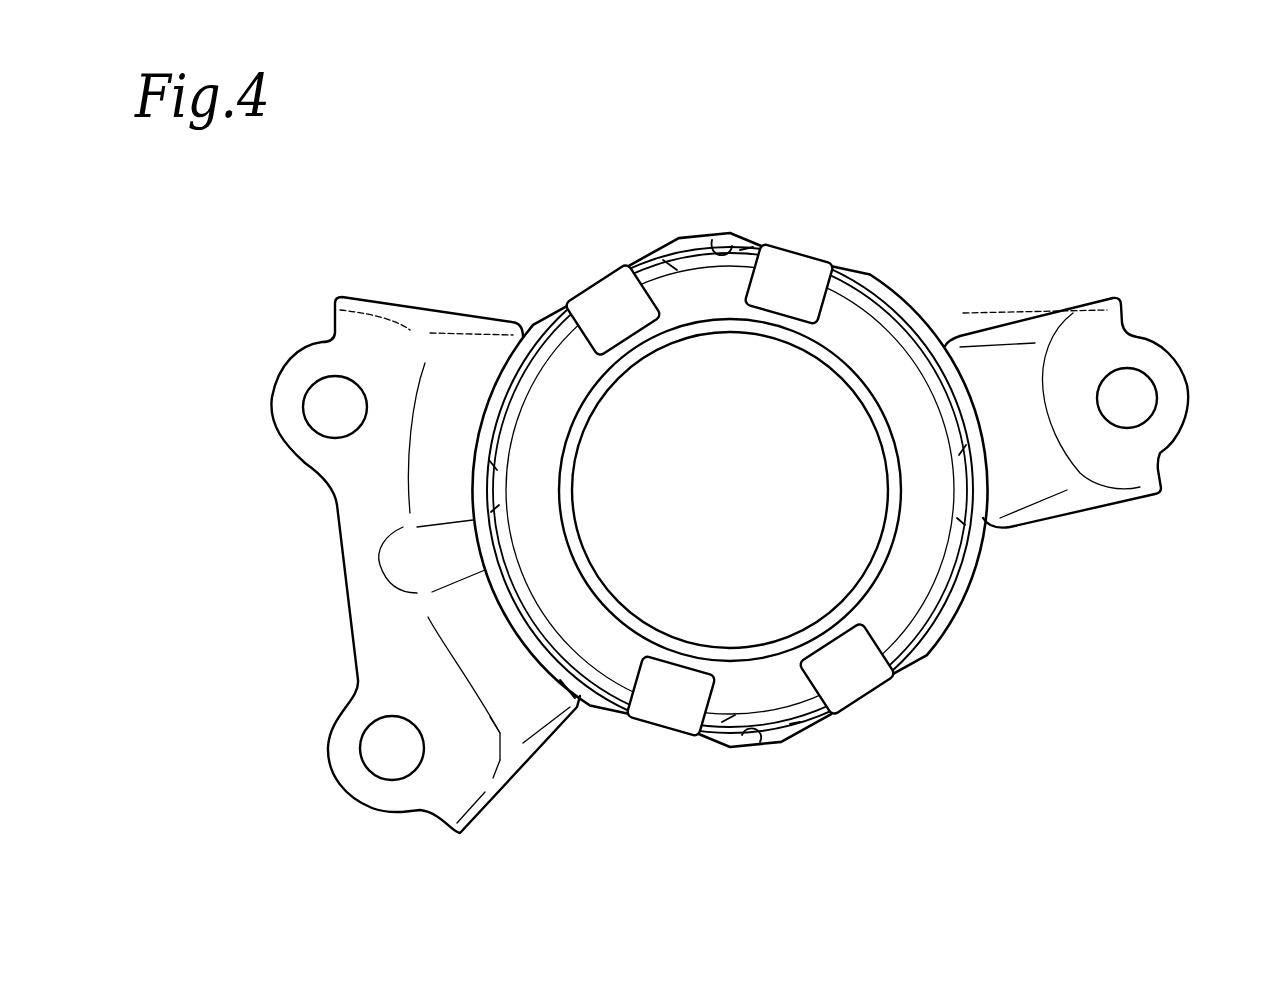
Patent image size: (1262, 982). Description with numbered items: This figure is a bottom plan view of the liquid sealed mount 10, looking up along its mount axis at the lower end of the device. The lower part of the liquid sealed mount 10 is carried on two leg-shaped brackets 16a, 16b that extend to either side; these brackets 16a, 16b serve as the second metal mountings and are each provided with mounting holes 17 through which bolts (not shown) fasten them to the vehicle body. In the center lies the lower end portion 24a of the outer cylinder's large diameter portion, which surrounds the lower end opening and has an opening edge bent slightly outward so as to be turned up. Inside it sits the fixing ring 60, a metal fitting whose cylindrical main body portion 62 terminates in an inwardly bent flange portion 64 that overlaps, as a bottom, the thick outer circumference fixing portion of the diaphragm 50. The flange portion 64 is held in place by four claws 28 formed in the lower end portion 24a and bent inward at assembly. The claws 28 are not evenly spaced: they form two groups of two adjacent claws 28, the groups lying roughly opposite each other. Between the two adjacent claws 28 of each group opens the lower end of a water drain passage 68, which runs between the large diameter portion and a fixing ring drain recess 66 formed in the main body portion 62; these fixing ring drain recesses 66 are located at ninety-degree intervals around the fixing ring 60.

The liquid sealed mount 10 is at (773, 493).
The bracket 16a is at (353, 573).
The bracket 16b is at (1067, 495).
The mounting hole 17 is at (327, 393).
The lower end portion 24a is at (518, 622).
The claw 28 is at (603, 300).
The diaphragm 50 is at (852, 560).
The fixing ring 60 is at (925, 552).
The main body portion 62 is at (905, 300).
The flange portion 64 is at (882, 345).
The fixing ring drain recess 66 is at (715, 245).
The water drain passage 68 is at (692, 245).